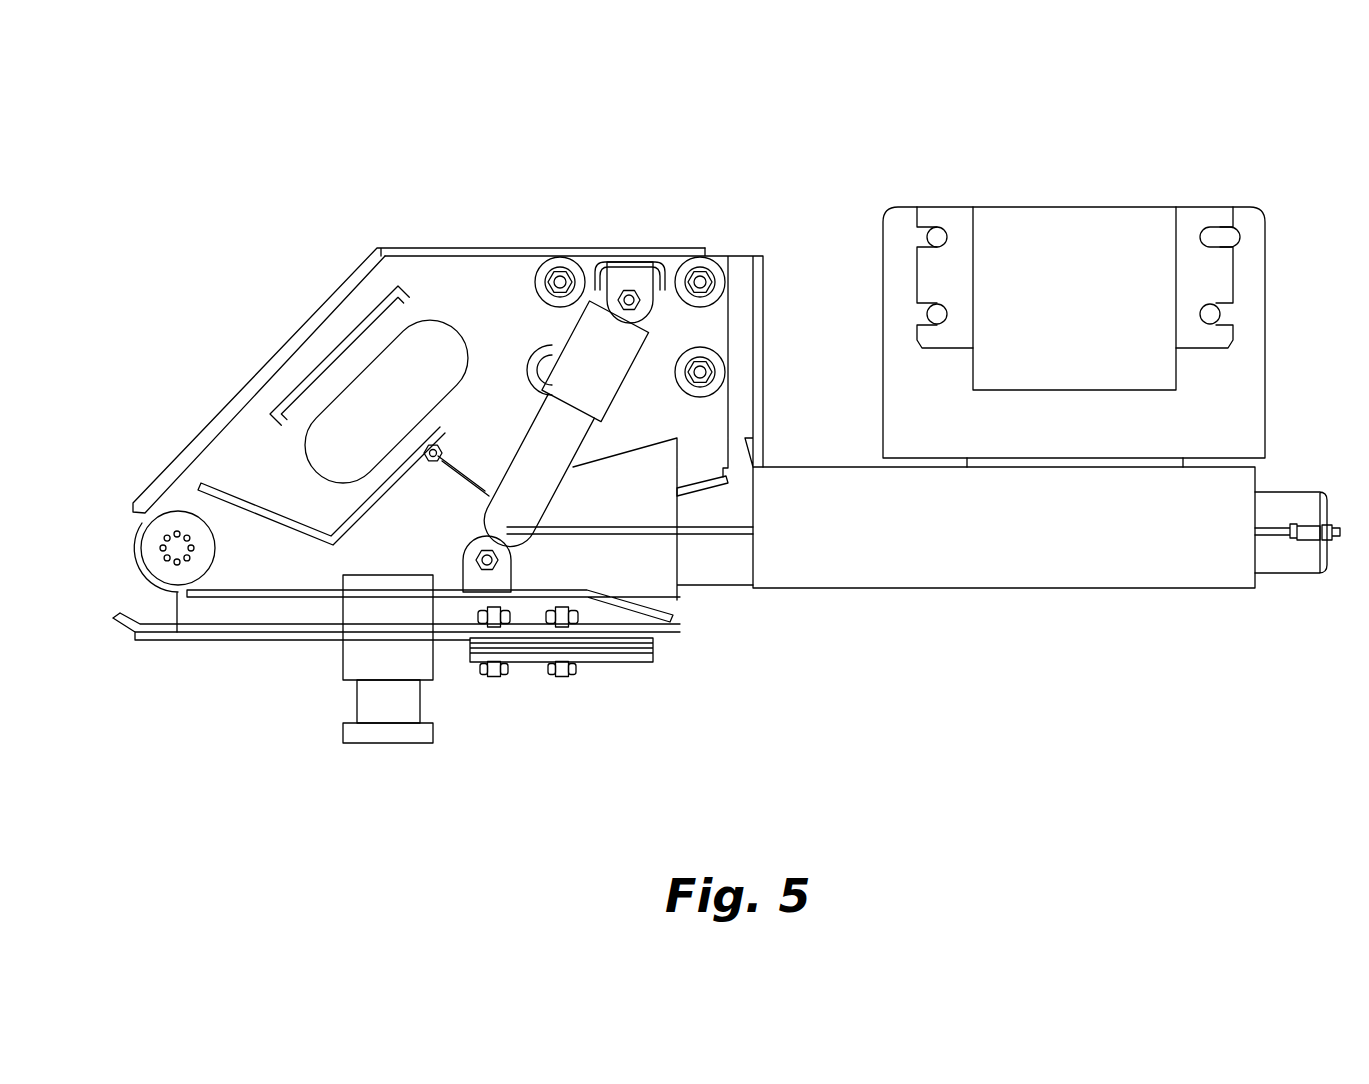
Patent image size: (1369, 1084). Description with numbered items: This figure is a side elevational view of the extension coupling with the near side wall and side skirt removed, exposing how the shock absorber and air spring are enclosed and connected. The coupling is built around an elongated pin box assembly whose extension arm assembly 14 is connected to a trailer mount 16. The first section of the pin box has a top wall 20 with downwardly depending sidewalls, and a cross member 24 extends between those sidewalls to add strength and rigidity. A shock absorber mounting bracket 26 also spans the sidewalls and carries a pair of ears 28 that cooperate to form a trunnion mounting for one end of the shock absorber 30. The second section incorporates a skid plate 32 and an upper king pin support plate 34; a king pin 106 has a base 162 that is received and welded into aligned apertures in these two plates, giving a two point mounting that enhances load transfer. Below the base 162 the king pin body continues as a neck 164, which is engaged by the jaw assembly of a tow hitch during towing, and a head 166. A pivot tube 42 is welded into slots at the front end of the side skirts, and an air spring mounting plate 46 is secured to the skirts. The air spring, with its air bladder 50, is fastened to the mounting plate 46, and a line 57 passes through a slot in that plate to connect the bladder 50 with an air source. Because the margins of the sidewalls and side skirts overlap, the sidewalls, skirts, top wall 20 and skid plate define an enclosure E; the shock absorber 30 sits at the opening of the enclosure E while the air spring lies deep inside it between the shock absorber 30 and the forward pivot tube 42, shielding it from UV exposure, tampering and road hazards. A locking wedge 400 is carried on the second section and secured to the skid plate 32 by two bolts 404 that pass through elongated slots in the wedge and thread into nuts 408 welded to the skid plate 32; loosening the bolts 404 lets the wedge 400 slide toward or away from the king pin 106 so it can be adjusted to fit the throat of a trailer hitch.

The extension arm assembly 14 is at (1103, 665).
The trailer mount 16 is at (1185, 172).
The top wall 20 is at (228, 400).
The cross member 24 is at (348, 343).
The shock absorber mounting bracket 26 is at (613, 266).
The ears 28 is at (647, 280).
The shock absorber 30 is at (547, 477).
The skid plate 32 is at (117, 627).
The upper king pin support plate 34 is at (245, 593).
The pivot tube 42 is at (143, 557).
The air spring mounting plate 46 is at (377, 500).
The air bladder 50 is at (417, 343).
The line 57 is at (455, 455).
The king pin 106 is at (462, 778).
The base 162 is at (352, 612).
The neck 164 is at (363, 700).
The head 166 is at (368, 737).
The locking wedge 400 is at (612, 651).
The bolts 404 is at (497, 677).
The nuts 408 is at (580, 617).
The enclosure E is at (232, 477).